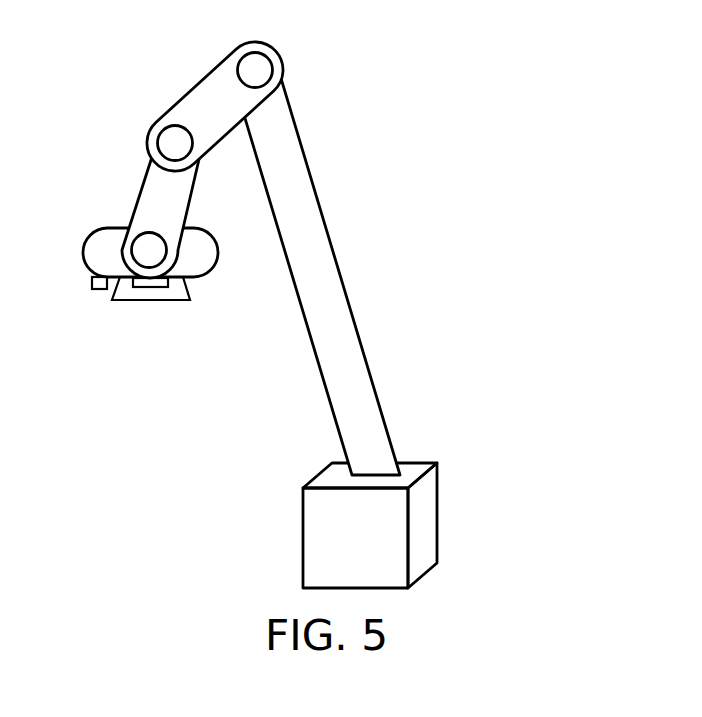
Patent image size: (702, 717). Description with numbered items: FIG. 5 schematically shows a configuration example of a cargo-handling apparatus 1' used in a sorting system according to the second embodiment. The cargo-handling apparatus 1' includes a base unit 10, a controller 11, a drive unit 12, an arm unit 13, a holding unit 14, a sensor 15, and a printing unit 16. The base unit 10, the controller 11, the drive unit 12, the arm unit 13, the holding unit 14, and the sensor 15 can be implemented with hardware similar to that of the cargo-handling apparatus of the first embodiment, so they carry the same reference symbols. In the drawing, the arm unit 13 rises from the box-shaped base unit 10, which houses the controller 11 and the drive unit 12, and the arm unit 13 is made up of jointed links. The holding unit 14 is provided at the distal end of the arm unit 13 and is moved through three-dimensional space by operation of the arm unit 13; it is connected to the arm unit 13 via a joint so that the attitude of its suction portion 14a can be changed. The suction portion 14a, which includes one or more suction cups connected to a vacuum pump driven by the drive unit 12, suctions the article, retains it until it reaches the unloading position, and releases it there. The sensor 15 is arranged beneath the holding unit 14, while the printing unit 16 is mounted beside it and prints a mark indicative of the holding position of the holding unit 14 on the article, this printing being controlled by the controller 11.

The cargo-handling apparatus 1' is at (235, 311).
The base unit 10 is at (313, 533).
The controller 11 is at (370, 525).
The drive unit 12 is at (370, 525).
The arm unit 13 is at (288, 35).
The holding unit 14 is at (73, 228).
The suction portion 14a is at (178, 296).
The sensor 15 is at (143, 288).
The printing unit 16 is at (100, 290).